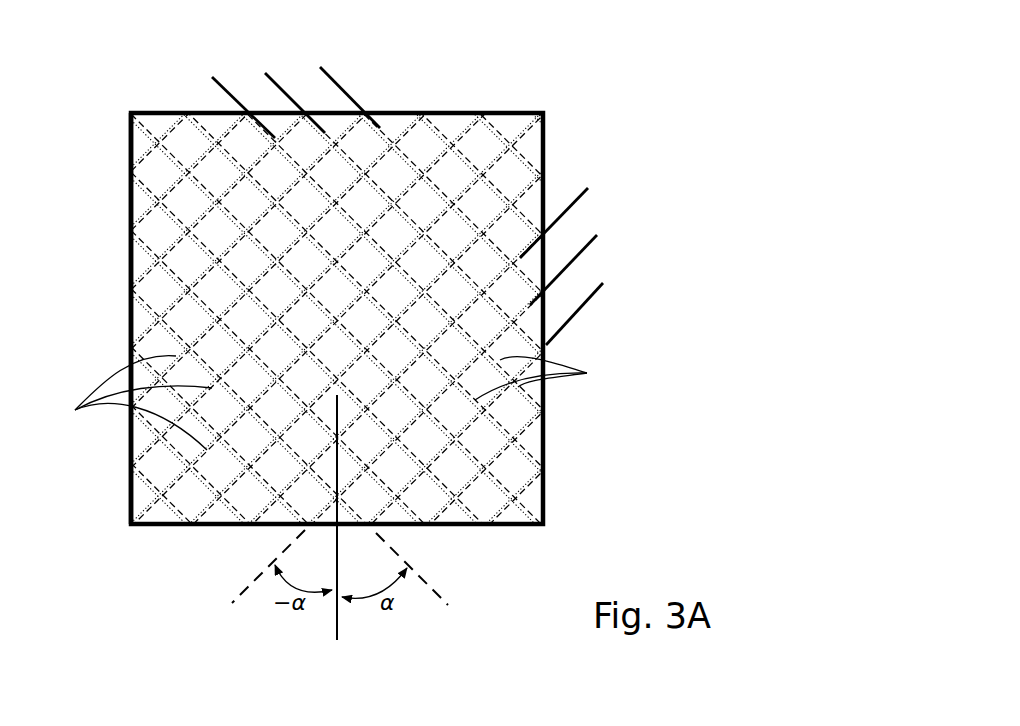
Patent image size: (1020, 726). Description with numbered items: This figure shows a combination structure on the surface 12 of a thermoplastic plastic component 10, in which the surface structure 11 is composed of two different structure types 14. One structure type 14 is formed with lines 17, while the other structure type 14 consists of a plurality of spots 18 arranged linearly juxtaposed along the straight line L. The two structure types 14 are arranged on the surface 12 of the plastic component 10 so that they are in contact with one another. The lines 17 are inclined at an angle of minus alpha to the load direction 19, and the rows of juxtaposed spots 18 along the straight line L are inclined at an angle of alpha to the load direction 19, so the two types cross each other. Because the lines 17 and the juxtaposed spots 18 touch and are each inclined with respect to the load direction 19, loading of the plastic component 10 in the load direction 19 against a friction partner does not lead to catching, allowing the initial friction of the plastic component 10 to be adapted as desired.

The plastic component 10 is at (414, 100).
The surface structure 11 is at (127, 206).
The surface 12 is at (250, 198).
The structure type 14 is at (179, 186).
The lines 17 is at (126, 403).
The spots 18 is at (549, 378).
The load direction 19 is at (337, 622).
The straight line L is at (333, 87).